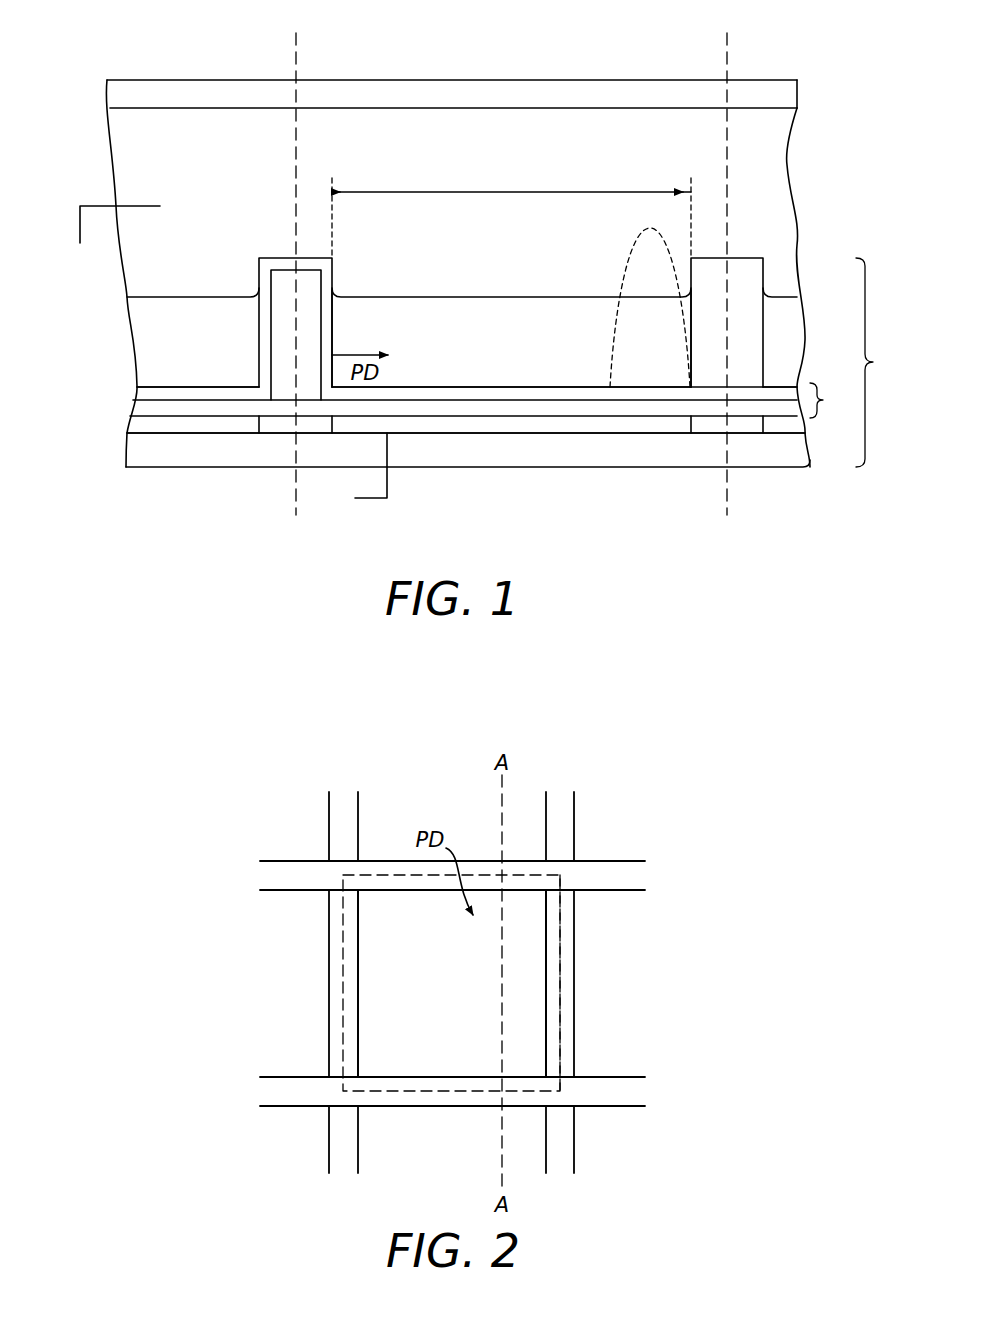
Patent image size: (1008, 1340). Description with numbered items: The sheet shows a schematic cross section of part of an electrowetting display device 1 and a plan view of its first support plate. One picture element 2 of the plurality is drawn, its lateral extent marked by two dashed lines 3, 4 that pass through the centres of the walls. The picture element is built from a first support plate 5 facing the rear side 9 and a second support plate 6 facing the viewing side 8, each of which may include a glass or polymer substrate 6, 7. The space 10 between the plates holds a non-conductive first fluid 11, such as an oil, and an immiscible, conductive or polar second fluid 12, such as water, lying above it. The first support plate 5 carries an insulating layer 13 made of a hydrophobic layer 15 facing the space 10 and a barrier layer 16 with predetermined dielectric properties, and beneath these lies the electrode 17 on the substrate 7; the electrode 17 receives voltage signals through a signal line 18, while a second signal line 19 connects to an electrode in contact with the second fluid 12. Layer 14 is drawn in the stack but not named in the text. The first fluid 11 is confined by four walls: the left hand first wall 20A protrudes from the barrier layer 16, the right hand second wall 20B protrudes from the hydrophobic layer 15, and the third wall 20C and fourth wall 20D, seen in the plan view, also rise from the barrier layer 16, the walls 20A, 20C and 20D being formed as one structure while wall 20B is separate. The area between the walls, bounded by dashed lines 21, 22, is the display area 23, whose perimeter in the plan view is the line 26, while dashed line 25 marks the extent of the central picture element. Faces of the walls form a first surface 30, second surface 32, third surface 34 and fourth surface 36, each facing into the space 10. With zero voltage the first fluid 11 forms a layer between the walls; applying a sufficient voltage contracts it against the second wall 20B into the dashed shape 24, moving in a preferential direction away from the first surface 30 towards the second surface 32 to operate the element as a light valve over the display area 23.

In FIG. 1, the electrowetting display device 1 is at (158, 57).
In FIG. 1, the picture element 2 is at (497, 57).
In FIG. 1, the dashed line 3 is at (296, 33).
In FIG. 1, the dashed line 4 is at (727, 33).
In FIG. 1, the first support plate 5 is at (873, 362).
In FIG. 1, the second support plate 6 is at (770, 90).
In FIG. 1, the substrate 7 is at (668, 452).
In FIG. 1, the viewing side 8 is at (373, 80).
In FIG. 1, the rear side 9 is at (497, 470).
In FIG. 1, the space 10 is at (605, 125).
In FIG. 1, the first fluid 11 is at (486, 297).
In FIG. 1, the second fluid 12 is at (775, 157).
In FIG. 1, the insulating layer 13 is at (830, 400).
In FIG. 1, the first electrode 14 is at (547, 387).
In FIG. 1, the hydrophobic layer 15 is at (425, 390).
In FIG. 1, the barrier layer 16 is at (440, 405).
In FIG. 1, the electrode 17 is at (572, 425).
In FIG. 1, the signal line 18 is at (372, 500).
In FIG. 1, the second signal line 19 is at (80, 232).
In FIG. 1, the first wall 20A is at (258, 262).
In FIG. 2, the first wall 20A is at (395, 882).
In FIG. 1, the second wall 20B is at (752, 270).
In FIG. 2, the second wall 20B is at (398, 1085).
In FIG. 2, the third wall 20C is at (552, 925).
In FIG. 2, the fourth wall 20D is at (337, 982).
In FIG. 1, the dashed line 21 is at (334, 178).
In FIG. 1, the dashed line 22 is at (689, 178).
In FIG. 1, the display area 23 is at (510, 192).
In FIG. 2, the display area 23 is at (438, 992).
In FIG. 1, the dashed shape 24 is at (618, 258).
In FIG. 2, the dashed line 25 is at (560, 978).
In FIG. 2, the line 26 is at (545, 1025).
In FIG. 1, the first surface 30 is at (333, 315).
In FIG. 2, the first surface 30 is at (442, 893).
In FIG. 1, the second surface 32 is at (690, 318).
In FIG. 2, the second surface 32 is at (440, 1078).
In FIG. 2, the third surface 34 is at (546, 943).
In FIG. 2, the fourth surface 36 is at (360, 1005).